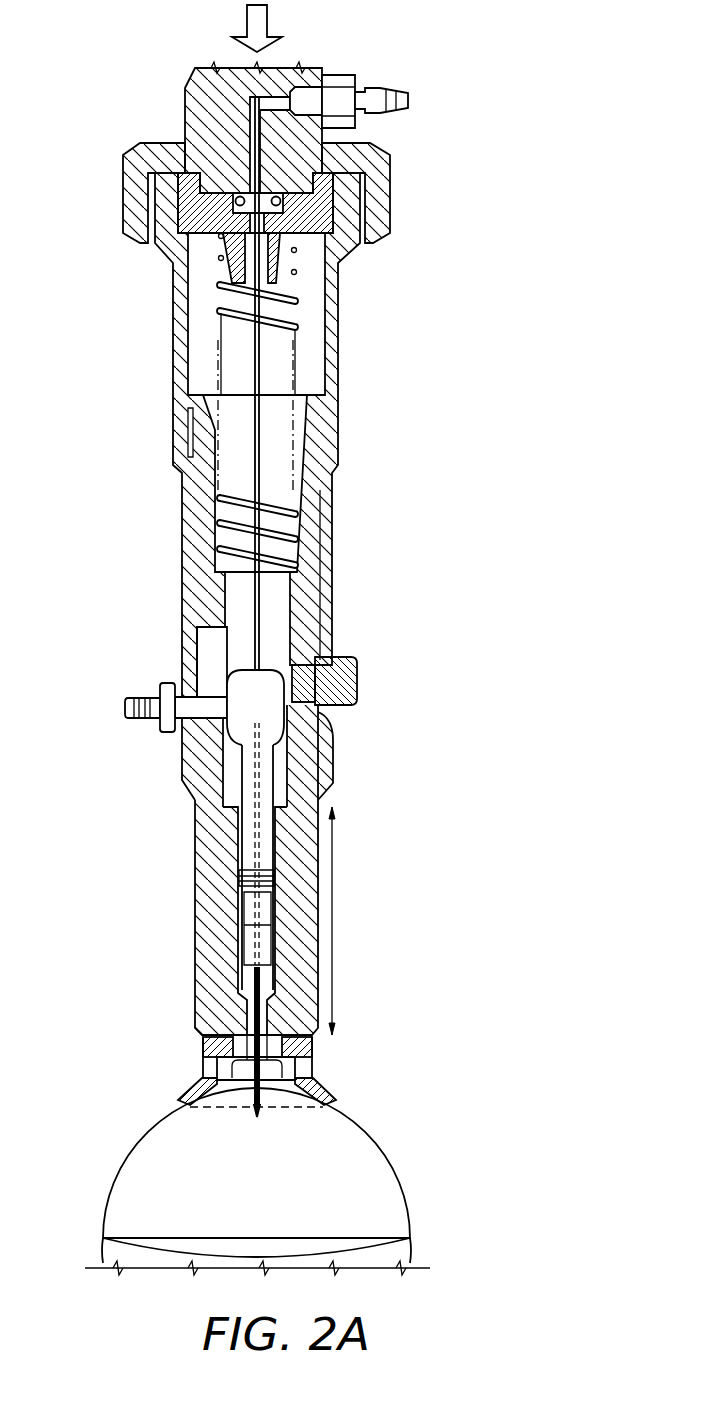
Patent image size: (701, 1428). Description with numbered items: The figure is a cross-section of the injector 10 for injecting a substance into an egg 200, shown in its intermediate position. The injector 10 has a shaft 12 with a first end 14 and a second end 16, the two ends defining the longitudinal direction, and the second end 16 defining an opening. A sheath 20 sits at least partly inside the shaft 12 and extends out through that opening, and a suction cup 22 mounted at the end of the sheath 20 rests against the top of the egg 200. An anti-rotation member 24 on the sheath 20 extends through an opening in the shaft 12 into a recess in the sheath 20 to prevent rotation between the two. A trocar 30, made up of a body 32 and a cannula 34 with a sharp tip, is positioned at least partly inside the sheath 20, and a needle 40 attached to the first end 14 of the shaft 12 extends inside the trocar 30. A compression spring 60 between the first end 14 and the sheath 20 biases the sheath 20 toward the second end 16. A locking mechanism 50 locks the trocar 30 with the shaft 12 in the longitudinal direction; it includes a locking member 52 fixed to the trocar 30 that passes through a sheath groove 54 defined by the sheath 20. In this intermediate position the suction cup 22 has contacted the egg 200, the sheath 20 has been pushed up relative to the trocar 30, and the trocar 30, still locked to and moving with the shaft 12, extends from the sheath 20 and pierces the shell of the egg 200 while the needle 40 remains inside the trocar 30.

The injector 10 is at (265, 595).
The shaft 12 is at (177, 336).
The first end 14 is at (237, 68).
The second end 16 is at (193, 798).
The sheath 20 is at (202, 925).
The suction cup 22 is at (187, 1098).
The anti-rotation member 24 is at (352, 678).
The trocar 30 is at (294, 707).
The body 32 is at (240, 778).
The cannula 34 is at (260, 1110).
The needle 40 is at (258, 622).
The locking mechanism 50 is at (121, 706).
The locking member 52 is at (152, 695).
The sheath groove 54 is at (205, 650).
The spring 60 is at (296, 326).
The egg 200 is at (378, 1172).